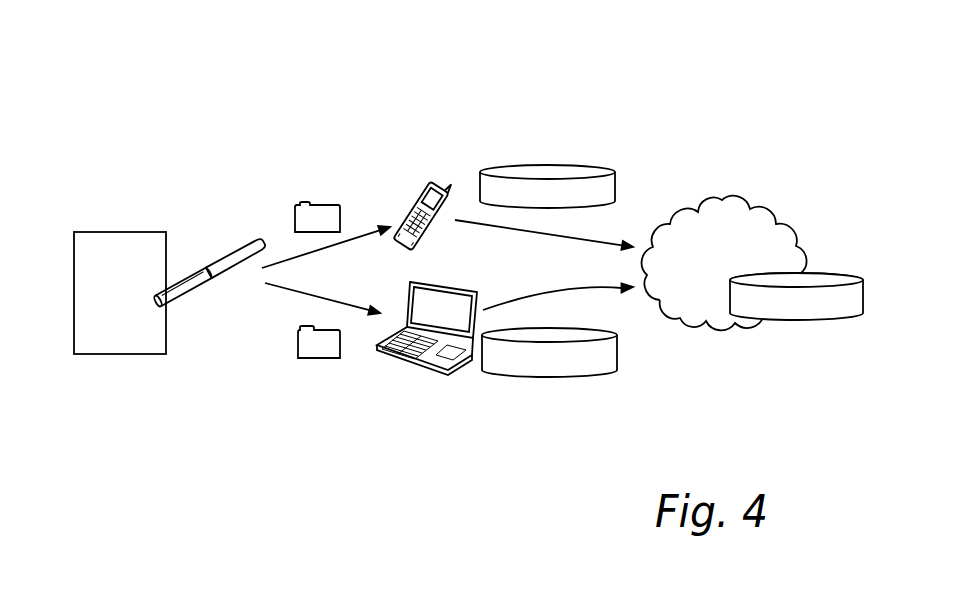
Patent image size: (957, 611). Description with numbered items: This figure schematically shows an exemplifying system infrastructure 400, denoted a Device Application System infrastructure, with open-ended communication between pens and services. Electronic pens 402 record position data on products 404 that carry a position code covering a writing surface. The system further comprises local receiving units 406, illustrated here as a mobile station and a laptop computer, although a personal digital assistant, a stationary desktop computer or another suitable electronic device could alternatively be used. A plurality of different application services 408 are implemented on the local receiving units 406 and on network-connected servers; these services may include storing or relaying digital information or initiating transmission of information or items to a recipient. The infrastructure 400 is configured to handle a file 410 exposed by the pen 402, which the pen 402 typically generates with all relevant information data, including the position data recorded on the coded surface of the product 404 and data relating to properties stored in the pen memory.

The system infrastructure 400 is at (690, 177).
The electronic pen 402 is at (220, 262).
The product 404 is at (117, 357).
The local receiving unit 406 is at (430, 187).
The application service 408 is at (550, 170).
The file 410 is at (320, 203).